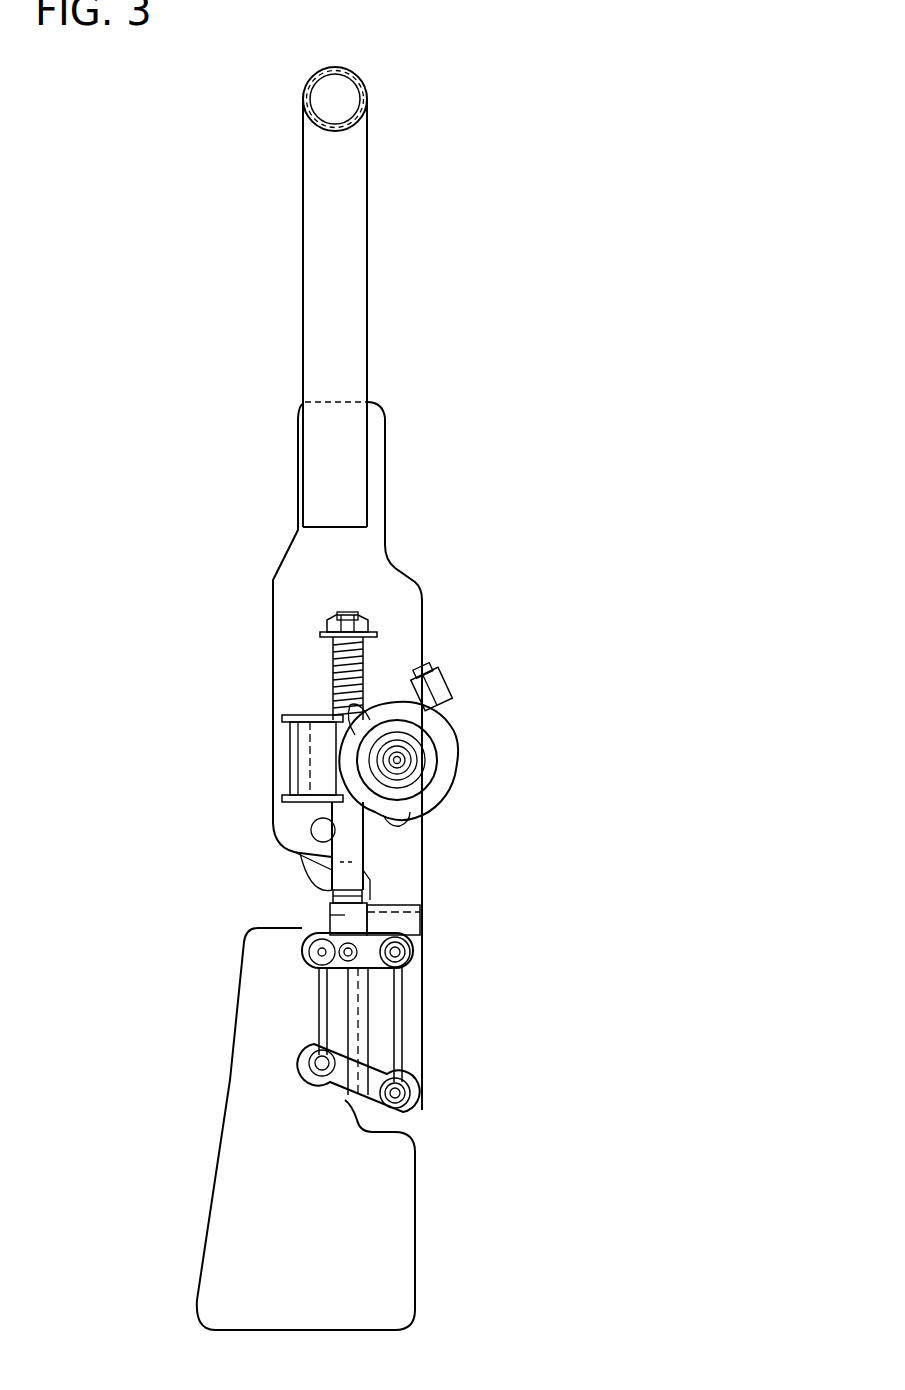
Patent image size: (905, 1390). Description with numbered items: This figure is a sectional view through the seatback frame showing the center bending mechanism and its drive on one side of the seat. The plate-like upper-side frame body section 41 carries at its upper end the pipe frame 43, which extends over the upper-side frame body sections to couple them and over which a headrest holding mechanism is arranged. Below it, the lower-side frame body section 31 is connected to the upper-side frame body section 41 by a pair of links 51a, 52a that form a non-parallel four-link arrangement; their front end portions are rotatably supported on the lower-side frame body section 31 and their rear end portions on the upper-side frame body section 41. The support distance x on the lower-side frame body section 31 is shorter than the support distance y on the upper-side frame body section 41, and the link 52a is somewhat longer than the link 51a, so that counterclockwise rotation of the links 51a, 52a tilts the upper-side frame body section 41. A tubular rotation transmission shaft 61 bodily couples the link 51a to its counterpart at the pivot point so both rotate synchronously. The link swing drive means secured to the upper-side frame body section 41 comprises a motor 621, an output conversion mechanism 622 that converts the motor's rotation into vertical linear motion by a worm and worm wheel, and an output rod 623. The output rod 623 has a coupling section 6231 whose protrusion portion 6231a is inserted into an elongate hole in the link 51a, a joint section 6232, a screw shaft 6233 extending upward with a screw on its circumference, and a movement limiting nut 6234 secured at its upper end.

The pipe frame 43 is at (343, 178).
The upper-side frame body section 41 is at (360, 568).
The movement limiting nut 6234 is at (372, 625).
The screw shaft 6233 is at (367, 660).
The motor 621 is at (455, 750).
The output conversion mechanism 622 is at (325, 767).
The output rod 623 is at (308, 948).
The joint section 6232 is at (330, 893).
The coupling section 6231 is at (325, 913).
The protrusion portion 6231a is at (325, 921).
The link 51a is at (405, 932).
The rotation transmission shaft 61 is at (420, 948).
The distance x is at (320, 1010).
The distance y is at (415, 1025).
The link 52a is at (404, 1115).
The lower-side frame body section 31 is at (367, 1241).